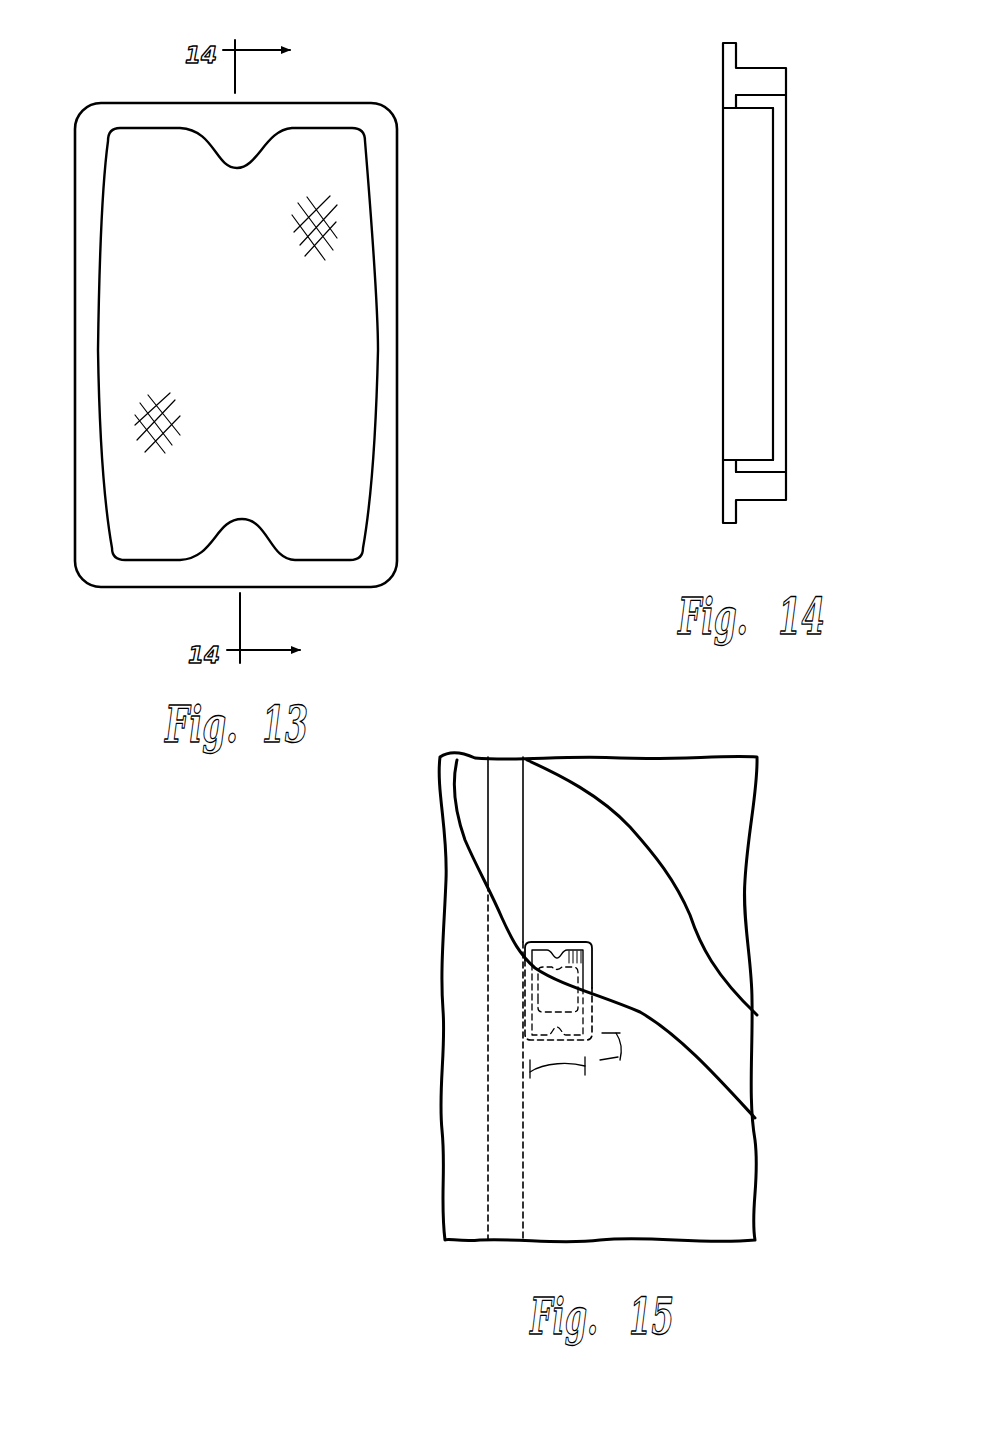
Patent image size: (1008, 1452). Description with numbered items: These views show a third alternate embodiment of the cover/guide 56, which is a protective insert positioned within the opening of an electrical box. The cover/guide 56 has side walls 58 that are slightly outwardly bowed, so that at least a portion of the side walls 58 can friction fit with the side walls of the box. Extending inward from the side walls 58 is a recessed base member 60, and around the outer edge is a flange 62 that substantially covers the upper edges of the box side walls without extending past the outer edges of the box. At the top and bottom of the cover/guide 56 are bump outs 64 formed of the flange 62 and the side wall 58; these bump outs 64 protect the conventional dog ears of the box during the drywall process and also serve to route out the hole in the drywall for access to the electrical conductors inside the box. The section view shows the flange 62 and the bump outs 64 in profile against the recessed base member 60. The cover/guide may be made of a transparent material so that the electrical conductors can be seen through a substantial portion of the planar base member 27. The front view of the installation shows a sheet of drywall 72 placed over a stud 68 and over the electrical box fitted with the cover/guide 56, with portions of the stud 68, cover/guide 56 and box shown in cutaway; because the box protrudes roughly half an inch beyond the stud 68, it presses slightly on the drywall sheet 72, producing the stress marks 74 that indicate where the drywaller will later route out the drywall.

In FIG. 15, the planar base member 27 is at (592, 980).
In FIG. 13, the cover/guide 56 is at (380, 66).
In FIG. 14, the cover/guide 56 is at (700, 128).
In FIG. 15, the cover/guide 56 is at (560, 930).
In FIG. 13, the side walls 58 is at (98, 340).
In FIG. 13, the recessed base member 60 is at (253, 313).
In FIG. 14, the recessed base member 60 is at (784, 277).
In FIG. 13, the flange 62 is at (396, 432).
In FIG. 14, the flange 62 is at (723, 62).
In FIG. 13, the bump outs 64 is at (233, 168).
In FIG. 14, the bump outs 64 is at (740, 112).
In FIG. 15, the stud 68 is at (520, 850).
In FIG. 15, the drywall sheet 72 is at (631, 1195).
In FIG. 15, the stress marks 74 is at (557, 1068).